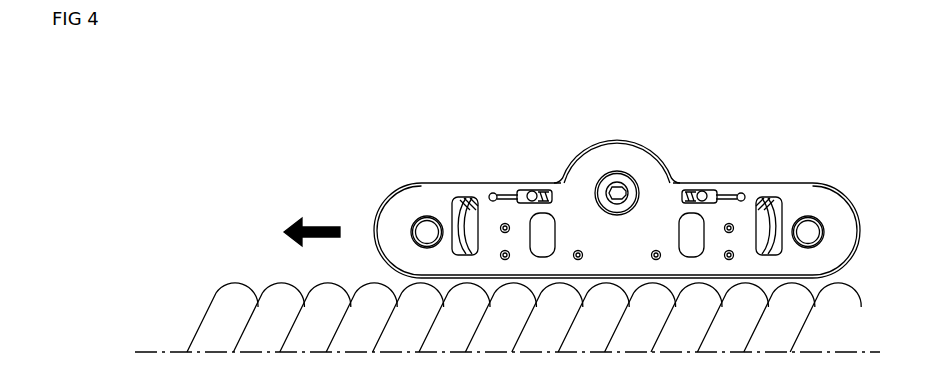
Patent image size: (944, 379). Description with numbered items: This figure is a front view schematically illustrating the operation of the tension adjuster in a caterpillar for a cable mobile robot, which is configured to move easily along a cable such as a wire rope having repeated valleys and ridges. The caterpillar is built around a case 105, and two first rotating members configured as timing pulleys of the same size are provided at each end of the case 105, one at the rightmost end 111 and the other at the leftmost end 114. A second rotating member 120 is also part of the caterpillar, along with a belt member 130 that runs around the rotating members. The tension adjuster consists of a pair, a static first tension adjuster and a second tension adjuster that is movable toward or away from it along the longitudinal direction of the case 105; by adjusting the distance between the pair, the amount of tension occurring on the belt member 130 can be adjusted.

The case 105 is at (625, 163).
The rightmost end 111 is at (465, 197).
The leftmost end 114 is at (767, 197).
The second rotating member 120 is at (582, 152).
The belt member 130 is at (392, 188).